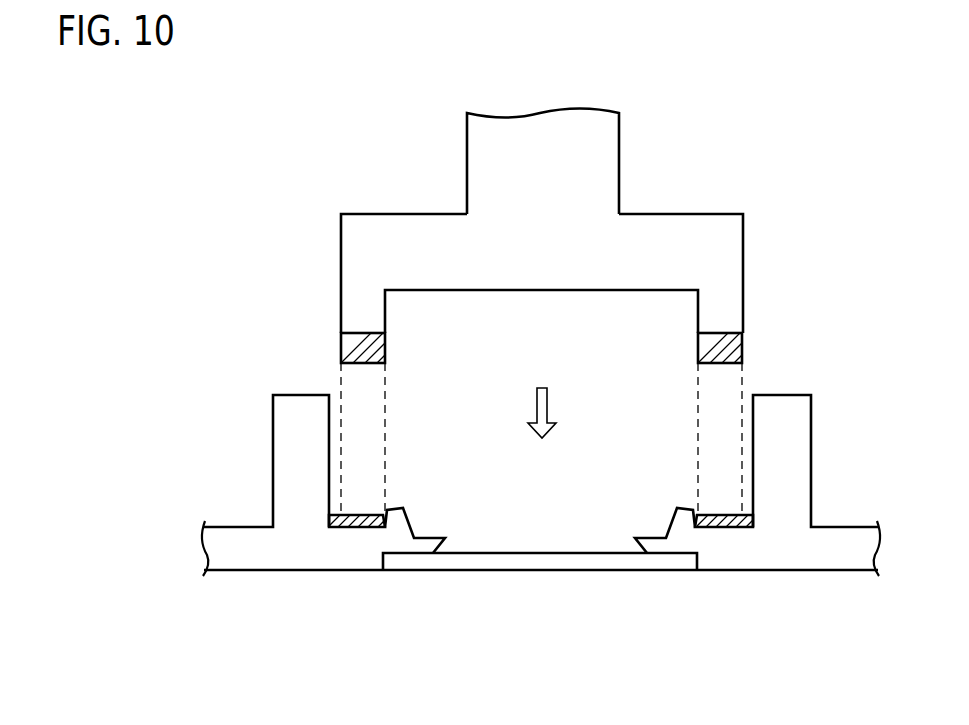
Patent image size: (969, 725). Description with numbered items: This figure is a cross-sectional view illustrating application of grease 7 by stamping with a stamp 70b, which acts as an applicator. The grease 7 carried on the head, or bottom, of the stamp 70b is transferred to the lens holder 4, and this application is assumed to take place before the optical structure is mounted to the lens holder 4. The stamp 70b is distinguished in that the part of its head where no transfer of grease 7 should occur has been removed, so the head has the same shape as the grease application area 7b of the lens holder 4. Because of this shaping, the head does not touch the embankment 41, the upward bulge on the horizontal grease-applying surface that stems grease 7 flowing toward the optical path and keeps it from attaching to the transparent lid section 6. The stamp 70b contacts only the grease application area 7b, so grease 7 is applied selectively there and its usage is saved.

The stamp 70b is at (728, 258).
The grease 7 is at (737, 352).
The lens holder 4 is at (792, 452).
The grease application area 7b is at (358, 527).
The embankment 41 is at (403, 521).
The transparent lid section 6 is at (547, 565).